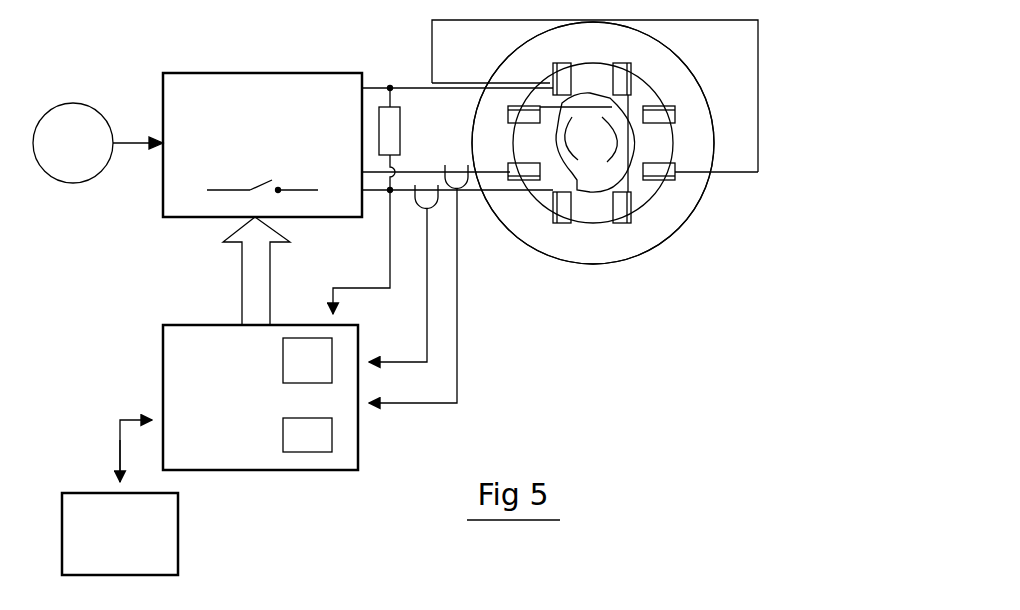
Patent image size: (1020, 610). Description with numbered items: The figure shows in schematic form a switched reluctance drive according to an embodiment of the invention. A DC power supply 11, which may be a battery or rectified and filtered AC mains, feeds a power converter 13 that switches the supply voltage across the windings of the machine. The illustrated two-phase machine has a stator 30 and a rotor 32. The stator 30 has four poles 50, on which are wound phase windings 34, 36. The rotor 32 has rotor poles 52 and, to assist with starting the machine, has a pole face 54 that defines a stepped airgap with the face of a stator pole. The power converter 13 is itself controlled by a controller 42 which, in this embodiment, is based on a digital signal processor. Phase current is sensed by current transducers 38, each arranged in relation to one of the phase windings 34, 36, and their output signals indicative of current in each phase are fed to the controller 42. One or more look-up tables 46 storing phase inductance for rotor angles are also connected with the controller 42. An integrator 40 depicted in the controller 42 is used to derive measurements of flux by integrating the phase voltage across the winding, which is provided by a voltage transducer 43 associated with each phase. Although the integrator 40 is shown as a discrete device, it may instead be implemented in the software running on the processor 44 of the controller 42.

The DC power supply 11 is at (73, 103).
The power converter 13 is at (210, 72).
The stator 30 is at (508, 68).
The rotor 32 is at (610, 150).
The phase winding 34 is at (696, 207).
The phase winding 36 is at (558, 232).
The current transducers 38 is at (433, 209).
The integrator 40 is at (298, 347).
The controller 42 is at (163, 345).
The voltage transducer 43 is at (400, 115).
The processor 44 is at (287, 443).
The look-up tables 46 is at (88, 493).
The stator poles 50 is at (583, 80).
The rotor poles 52 is at (587, 183).
The pole face 54 is at (590, 107).